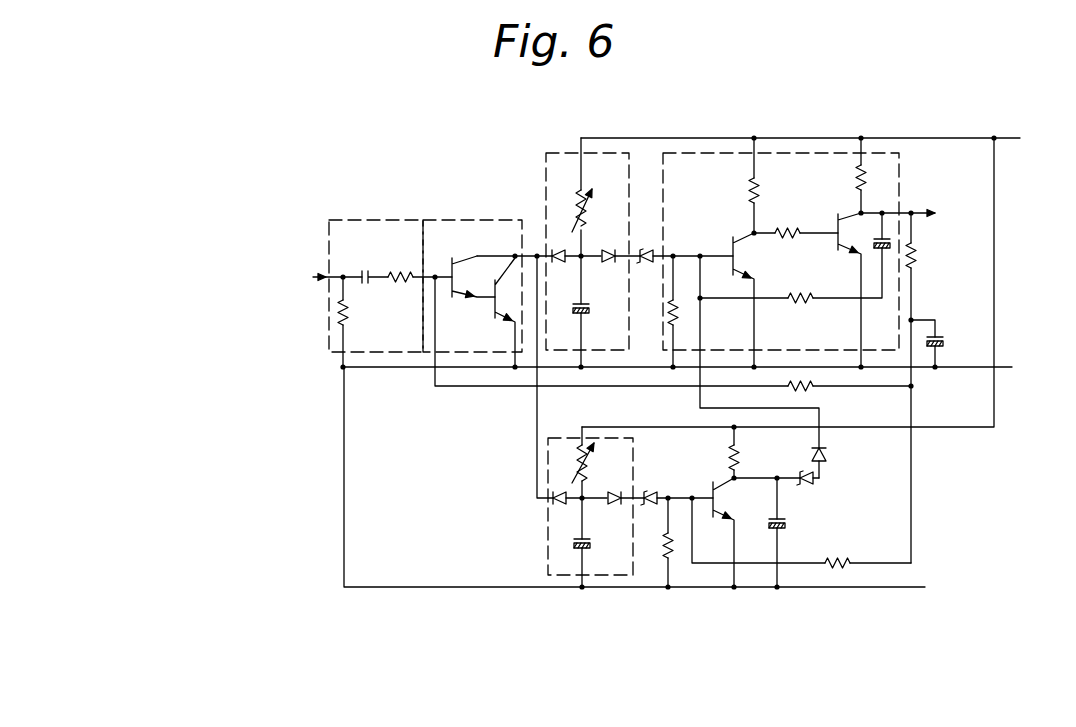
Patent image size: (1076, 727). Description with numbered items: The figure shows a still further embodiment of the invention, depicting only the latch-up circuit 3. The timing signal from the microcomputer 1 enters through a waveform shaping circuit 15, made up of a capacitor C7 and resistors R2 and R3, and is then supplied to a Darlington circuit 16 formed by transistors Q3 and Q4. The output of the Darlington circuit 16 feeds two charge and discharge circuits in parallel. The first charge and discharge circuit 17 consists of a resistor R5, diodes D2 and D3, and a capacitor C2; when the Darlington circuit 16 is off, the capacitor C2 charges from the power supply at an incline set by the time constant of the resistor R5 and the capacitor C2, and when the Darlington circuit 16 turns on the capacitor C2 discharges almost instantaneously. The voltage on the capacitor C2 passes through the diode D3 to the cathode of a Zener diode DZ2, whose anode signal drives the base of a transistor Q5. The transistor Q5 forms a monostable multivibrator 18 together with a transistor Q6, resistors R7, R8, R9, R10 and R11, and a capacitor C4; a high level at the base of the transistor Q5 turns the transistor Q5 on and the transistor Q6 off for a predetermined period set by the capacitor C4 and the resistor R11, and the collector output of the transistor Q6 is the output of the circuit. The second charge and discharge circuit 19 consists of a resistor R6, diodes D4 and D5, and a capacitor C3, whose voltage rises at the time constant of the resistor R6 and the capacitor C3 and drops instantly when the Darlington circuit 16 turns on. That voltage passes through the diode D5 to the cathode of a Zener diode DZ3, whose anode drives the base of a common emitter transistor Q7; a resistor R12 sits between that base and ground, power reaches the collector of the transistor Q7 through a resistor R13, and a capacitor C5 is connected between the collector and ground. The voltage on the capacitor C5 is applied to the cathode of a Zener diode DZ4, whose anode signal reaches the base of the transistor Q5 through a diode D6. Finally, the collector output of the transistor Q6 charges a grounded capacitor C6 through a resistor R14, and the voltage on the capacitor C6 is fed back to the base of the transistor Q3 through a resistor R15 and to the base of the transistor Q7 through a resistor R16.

The microcomputer 1 is at (272, 265).
The latch-up circuit 3 is at (1020, 528).
The waveform shaping circuit 15 is at (390, 219).
The Darlington circuit 16 is at (473, 219).
The charge and discharge circuit 17 is at (553, 152).
The monostable multivibrator 18 is at (784, 152).
The charge and discharge circuit 19 is at (557, 577).
The capacitor C7 is at (363, 271).
The resistor R3 is at (405, 270).
The resistor R2 is at (348, 312).
The transistor Q3 is at (456, 288).
The transistor Q4 is at (498, 322).
The resistor R5 is at (586, 212).
The diode D2 is at (554, 263).
The diode D3 is at (604, 274).
The capacitor C2 is at (589, 309).
The Zener diode DZ2 is at (649, 250).
The resistor R7 is at (673, 320).
The resistor R8 is at (758, 202).
The resistor R9 is at (793, 245).
The resistor R10 is at (858, 178).
The resistor R11 is at (806, 303).
The transistor Q5 is at (745, 266).
The transistor Q6 is at (844, 252).
The capacitor C4 is at (886, 236).
The resistor R14 is at (914, 263).
The capacitor C6 is at (944, 342).
The resistor R15 is at (815, 386).
The resistor R6 is at (584, 458).
The diode D4 is at (553, 501).
The diode D5 is at (614, 505).
The capacitor C3 is at (590, 546).
The Zener diode DZ3 is at (646, 490).
The resistor R12 is at (673, 537).
The resistor R13 is at (734, 450).
The transistor Q7 is at (726, 495).
The capacitor C5 is at (790, 528).
The diode D6 is at (827, 452).
The Zener diode DZ4 is at (818, 482).
The resistor R16 is at (849, 557).